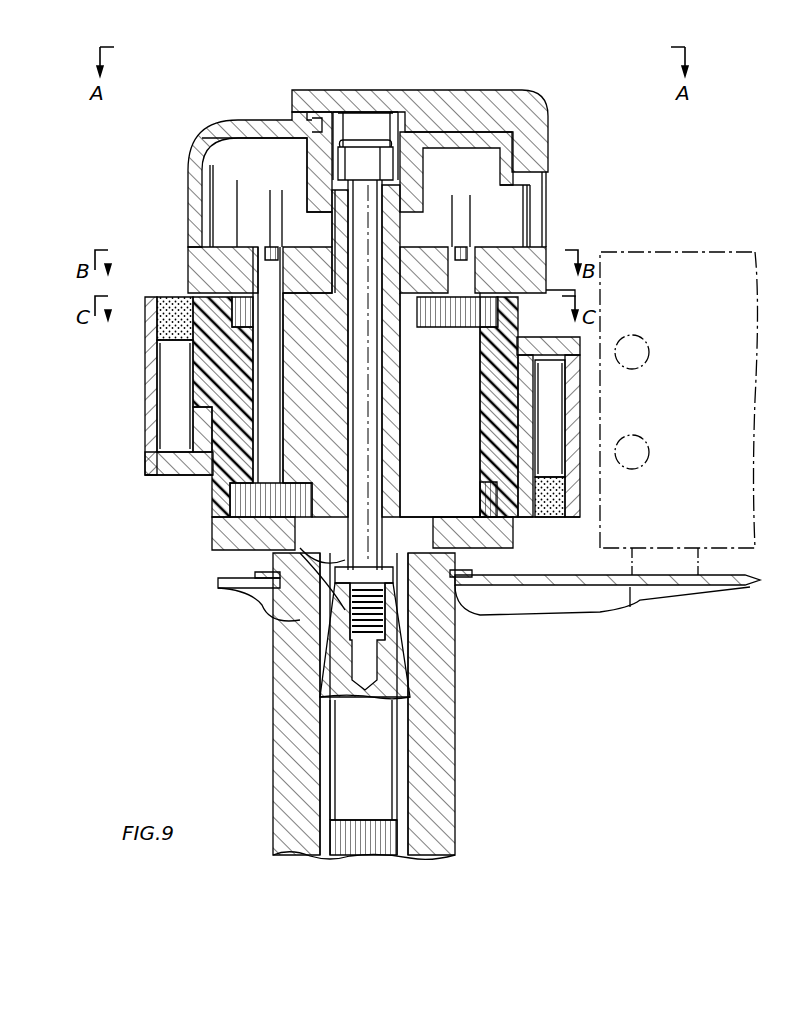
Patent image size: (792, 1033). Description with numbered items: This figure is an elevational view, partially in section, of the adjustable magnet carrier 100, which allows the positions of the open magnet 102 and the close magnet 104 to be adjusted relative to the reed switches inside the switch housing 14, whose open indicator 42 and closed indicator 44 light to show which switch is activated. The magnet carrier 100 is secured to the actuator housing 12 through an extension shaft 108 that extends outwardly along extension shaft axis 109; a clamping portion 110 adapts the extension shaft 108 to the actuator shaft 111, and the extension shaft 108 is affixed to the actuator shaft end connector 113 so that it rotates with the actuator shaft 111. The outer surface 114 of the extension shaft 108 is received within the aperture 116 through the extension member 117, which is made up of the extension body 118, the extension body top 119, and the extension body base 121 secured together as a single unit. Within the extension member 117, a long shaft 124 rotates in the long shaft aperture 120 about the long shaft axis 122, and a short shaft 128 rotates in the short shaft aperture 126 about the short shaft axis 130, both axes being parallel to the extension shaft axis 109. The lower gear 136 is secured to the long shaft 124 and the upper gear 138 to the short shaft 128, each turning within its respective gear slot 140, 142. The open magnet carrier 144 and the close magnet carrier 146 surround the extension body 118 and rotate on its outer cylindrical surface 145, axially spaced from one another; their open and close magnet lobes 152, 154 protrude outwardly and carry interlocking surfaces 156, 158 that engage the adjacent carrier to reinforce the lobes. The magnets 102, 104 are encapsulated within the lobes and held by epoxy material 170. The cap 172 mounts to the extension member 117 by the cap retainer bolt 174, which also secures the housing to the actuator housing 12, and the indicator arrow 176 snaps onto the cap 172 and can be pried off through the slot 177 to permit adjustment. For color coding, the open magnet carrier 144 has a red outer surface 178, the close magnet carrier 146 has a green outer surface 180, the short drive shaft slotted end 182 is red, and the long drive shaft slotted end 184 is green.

The adjustable magnet carrier 100 is at (204, 60).
The open magnet 102 is at (150, 458).
The close magnet 104 is at (520, 517).
The extension shaft 108 is at (392, 240).
The extension shaft axis 109 is at (368, 140).
The clamping portion 110 is at (335, 762).
The actuator shaft 111 is at (440, 792).
The actuator shaft end connector 113 is at (400, 838).
The outer surface 114 is at (420, 600).
The aperture 116 is at (320, 560).
The extension member 117 is at (450, 489).
The extension body 118 is at (472, 577).
The extension body top 119 is at (192, 255).
The long shaft aperture 120 is at (225, 528).
The extension body base 121 is at (300, 555).
The long shaft axis 122 is at (268, 232).
The long shaft 124 is at (225, 360).
The short shaft aperture 126 is at (548, 250).
The short shaft 128 is at (480, 430).
The short shaft axis 130 is at (548, 188).
The lower gear 136 is at (295, 420).
The upper gear 138 is at (546, 290).
The gear slot 140 is at (285, 483).
The gear slot 142 is at (470, 330).
The open magnet carrier 144 is at (190, 352).
The outer cylindrical surface 145 is at (485, 470).
The close magnet carrier 146 is at (545, 438).
The open magnet lobe 152 is at (160, 480).
The close magnet lobe 154 is at (575, 368).
The interlocking surface 156 is at (505, 335).
The interlocking surface 158 is at (235, 490).
The epoxy material 170 is at (175, 305).
The cap 172 is at (220, 128).
The cap retainer bolt 174 is at (430, 720).
The indicator arrow 176 is at (515, 100).
The slot 177 is at (312, 118).
The red outer surface 178 is at (150, 428).
The green outer surface 180 is at (580, 490).
The short drive shaft slotted end 182 is at (467, 232).
The long drive shaft slotted end 184 is at (280, 247).
The actuator housing 12 is at (640, 600).
The switch housing 14 is at (732, 245).
The open indicator 42 is at (648, 350).
The closed indicator 44 is at (648, 452).